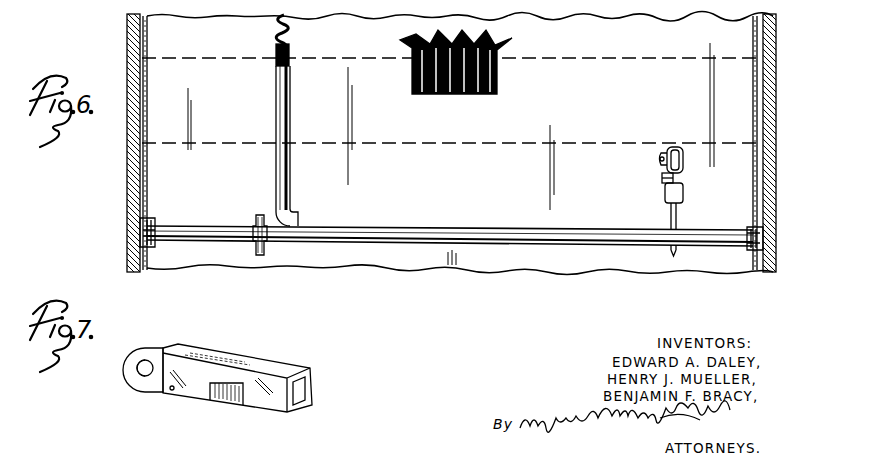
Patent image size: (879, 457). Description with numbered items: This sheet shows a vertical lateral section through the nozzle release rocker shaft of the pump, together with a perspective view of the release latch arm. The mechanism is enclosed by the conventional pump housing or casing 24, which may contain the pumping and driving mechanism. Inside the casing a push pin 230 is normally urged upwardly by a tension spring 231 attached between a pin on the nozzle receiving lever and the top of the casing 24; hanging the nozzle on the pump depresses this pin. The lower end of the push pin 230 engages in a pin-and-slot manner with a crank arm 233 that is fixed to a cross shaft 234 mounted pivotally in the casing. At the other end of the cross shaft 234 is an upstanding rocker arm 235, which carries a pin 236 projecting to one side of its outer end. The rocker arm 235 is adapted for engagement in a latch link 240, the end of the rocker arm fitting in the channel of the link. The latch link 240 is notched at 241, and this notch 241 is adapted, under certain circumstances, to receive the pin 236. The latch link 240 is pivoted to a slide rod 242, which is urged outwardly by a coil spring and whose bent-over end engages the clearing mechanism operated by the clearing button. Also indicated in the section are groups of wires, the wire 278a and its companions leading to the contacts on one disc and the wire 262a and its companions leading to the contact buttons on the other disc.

In FIG. 6, the pump housing or casing 24 is at (430, 268).
In FIG. 6, the push pin 230 is at (276, 103).
In FIG. 6, the tension spring 231 is at (294, 32).
In FIG. 6, the crank arm 233 is at (262, 215).
In FIG. 6, the cross shaft 234 is at (316, 242).
In FIG. 6, the rocker arm 235 is at (670, 218).
In FIG. 6, the pin 236 is at (661, 178).
In FIG. 6, the latch link 240 is at (680, 148).
In FIG. 7, the latch link 240 is at (295, 367).
In FIG. 7, the notch 241 is at (236, 400).
In FIG. 6, the slide rod 242 is at (661, 150).
In FIG. 6, the wire 278a is at (424, 38).
In FIG. 6, the wire 262a is at (486, 40).